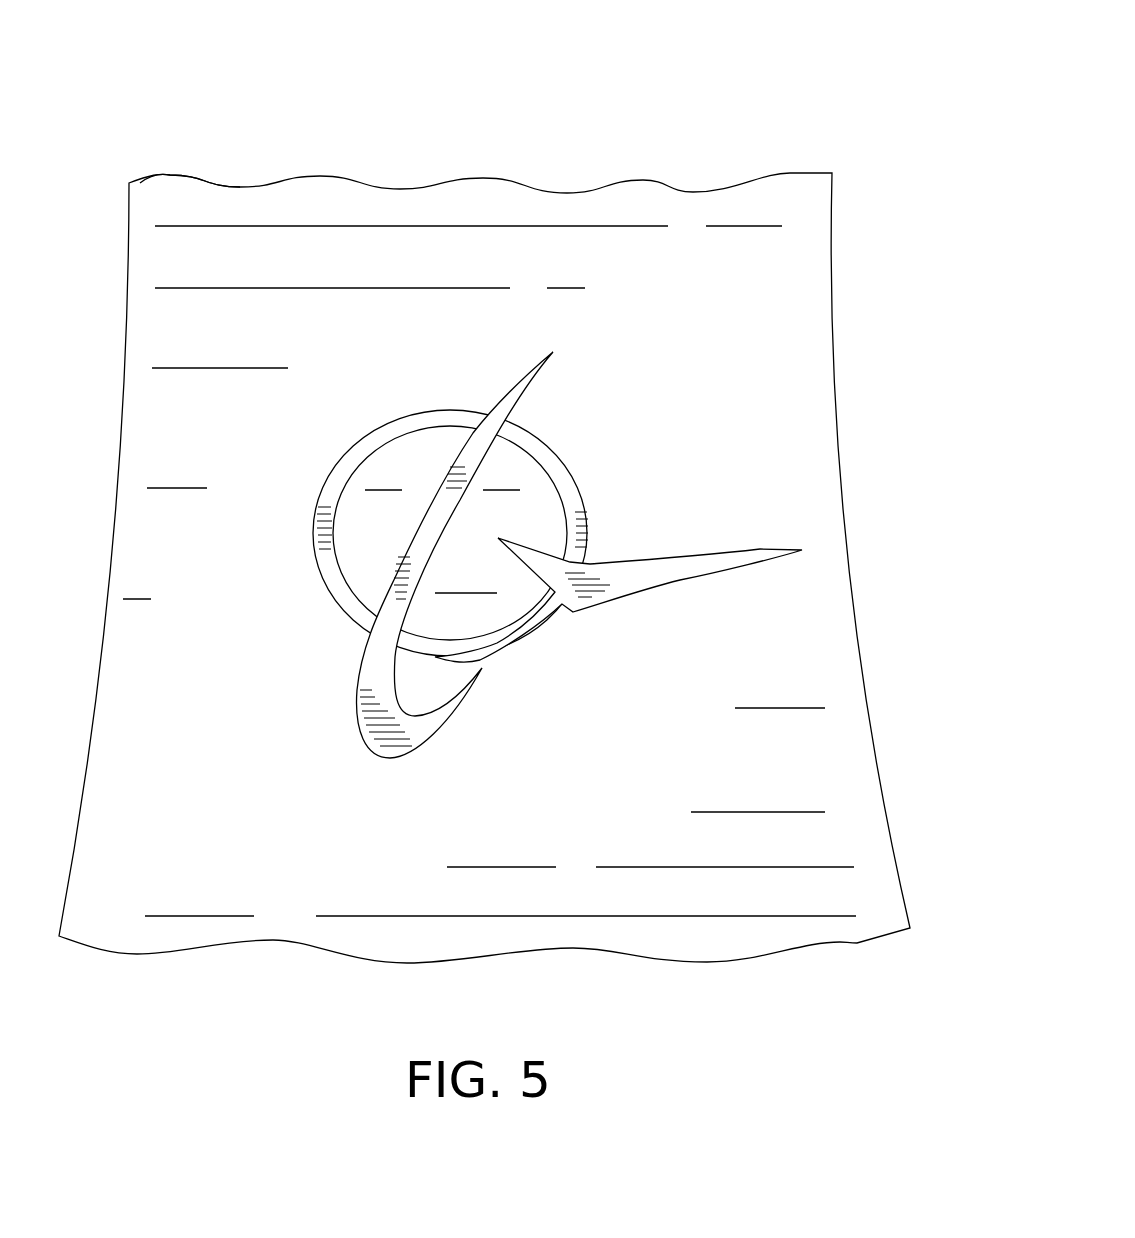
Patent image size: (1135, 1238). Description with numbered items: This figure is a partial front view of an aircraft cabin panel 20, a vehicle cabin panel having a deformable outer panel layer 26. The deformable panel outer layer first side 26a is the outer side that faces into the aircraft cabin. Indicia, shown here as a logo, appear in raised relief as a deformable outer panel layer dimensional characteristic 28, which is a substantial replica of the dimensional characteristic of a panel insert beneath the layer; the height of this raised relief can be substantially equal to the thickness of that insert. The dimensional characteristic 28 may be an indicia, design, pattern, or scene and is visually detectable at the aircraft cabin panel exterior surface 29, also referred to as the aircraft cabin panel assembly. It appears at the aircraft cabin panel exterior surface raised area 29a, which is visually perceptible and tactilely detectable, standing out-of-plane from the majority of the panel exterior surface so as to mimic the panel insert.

The aircraft cabin panel 20 is at (550, 167).
The deformable outer panel layer 26 is at (757, 260).
The deformable panel outer layer first side 26a is at (218, 215).
The deformable outer panel layer dimensional characteristic 28 is at (560, 470).
The aircraft cabin panel exterior surface 29 is at (785, 452).
The aircraft cabin panel exterior surface raised area 29a is at (732, 570).